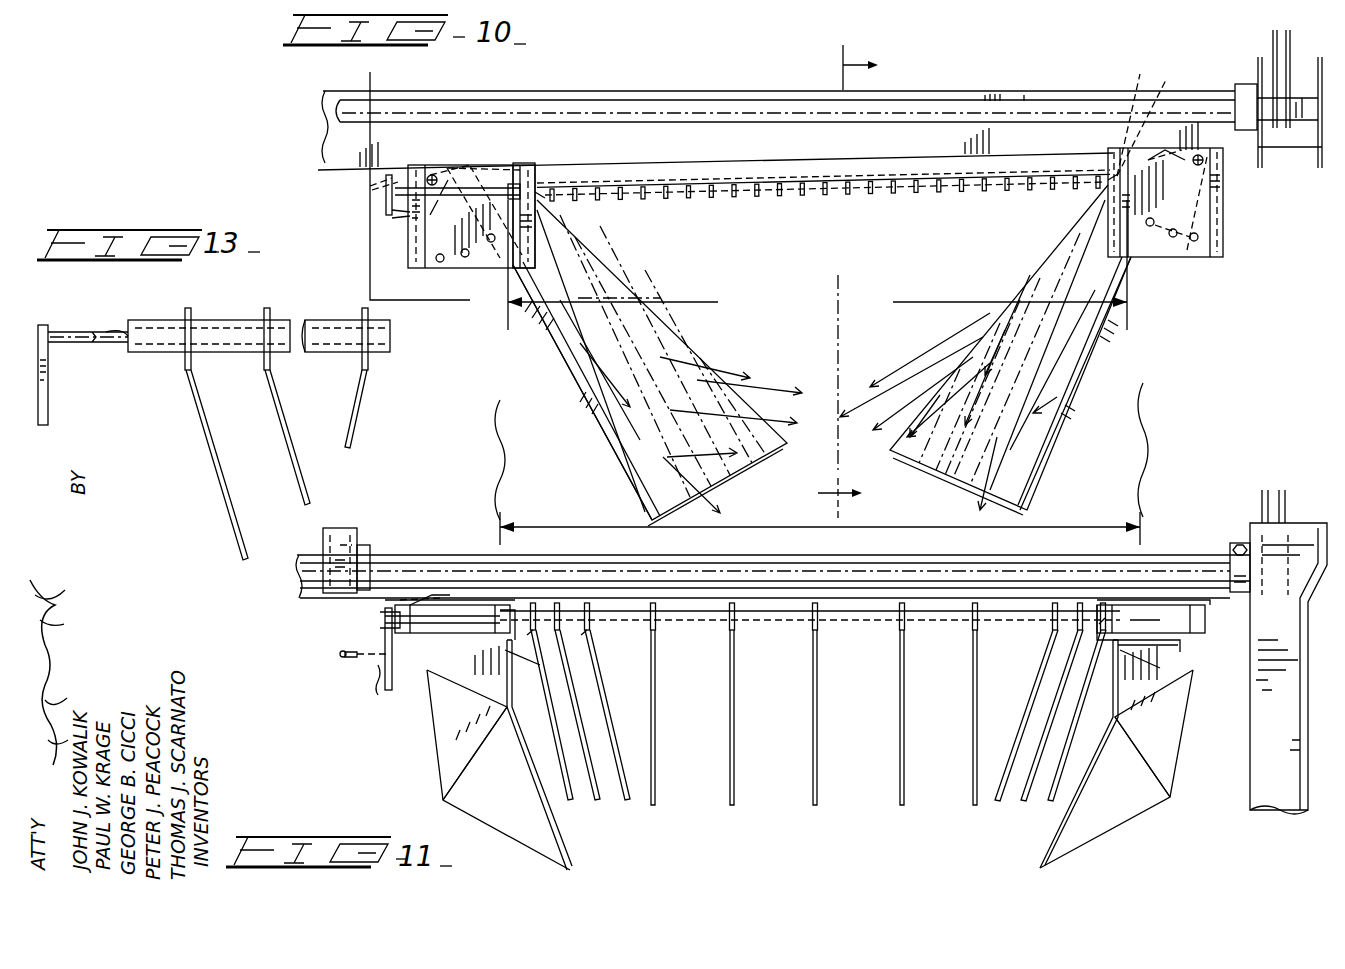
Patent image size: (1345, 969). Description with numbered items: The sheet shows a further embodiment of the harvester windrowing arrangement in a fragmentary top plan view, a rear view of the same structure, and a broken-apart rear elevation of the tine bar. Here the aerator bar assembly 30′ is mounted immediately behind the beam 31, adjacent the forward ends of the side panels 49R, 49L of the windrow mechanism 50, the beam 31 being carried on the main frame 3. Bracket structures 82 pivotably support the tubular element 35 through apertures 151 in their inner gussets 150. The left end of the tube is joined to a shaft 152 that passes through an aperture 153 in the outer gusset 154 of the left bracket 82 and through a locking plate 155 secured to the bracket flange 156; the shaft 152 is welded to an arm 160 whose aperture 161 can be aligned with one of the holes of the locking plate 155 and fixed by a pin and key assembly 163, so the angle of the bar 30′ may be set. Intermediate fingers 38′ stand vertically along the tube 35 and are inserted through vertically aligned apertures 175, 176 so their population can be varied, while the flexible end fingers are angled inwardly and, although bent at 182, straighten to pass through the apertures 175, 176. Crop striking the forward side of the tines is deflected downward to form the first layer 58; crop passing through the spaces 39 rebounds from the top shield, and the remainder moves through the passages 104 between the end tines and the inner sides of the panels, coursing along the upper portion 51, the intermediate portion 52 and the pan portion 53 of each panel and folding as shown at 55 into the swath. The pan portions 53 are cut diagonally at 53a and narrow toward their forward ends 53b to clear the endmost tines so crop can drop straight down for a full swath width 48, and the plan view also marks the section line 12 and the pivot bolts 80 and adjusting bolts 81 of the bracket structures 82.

In FIG. 10, the main frame beam 3 is at (370, 72).
In FIG. 10, the section line 12 is at (839, 283).
In FIG. 10, the aerator bar assembly 30′ is at (1032, 170).
In FIG. 11, the aerator bar assembly 30′ is at (1005, 608).
In FIG. 10, the beam 31 is at (1024, 94).
In FIG. 11, the beam 31 is at (897, 556).
In FIG. 13, the tubular element 35 is at (332, 336).
In FIG. 10, the intermediate fingers 38′ is at (748, 196).
In FIG. 11, the intermediate fingers 38′ is at (812, 681).
In FIG. 11, the spaces between the teeth 39 is at (770, 782).
In FIG. 10, the swath width 48 is at (534, 324).
In FIG. 10, the left side panel 49L is at (610, 445).
In FIG. 11, the left side panel 49L is at (442, 798).
In FIG. 10, the right side panel 49R is at (1097, 361).
In FIG. 11, the right side panel 49R is at (1172, 796).
In FIG. 10, the windrow mechanism 50 is at (1030, 508).
In FIG. 10, the upper portion 51 is at (580, 345).
In FIG. 11, the upper portion 51 is at (428, 692).
In FIG. 10, the intermediate portion 52 is at (576, 270).
In FIG. 11, the intermediate portion 52 is at (452, 748).
In FIG. 10, the pan portion 53 is at (650, 341).
In FIG. 11, the pan portion 53 is at (486, 815).
In FIG. 10, the diagonal cut 53a is at (616, 260).
In FIG. 10, the forward end of pan portion 53b is at (468, 168).
In FIG. 10, the branch of material flow 55 is at (873, 402).
In FIG. 11, the first layer 58 is at (558, 806).
In FIG. 10, the pivot bolt 80 is at (432, 178).
In FIG. 10, the adjustment bolts 81 is at (442, 262).
In FIG. 10, the bracket structure 82 is at (403, 275).
In FIG. 11, the bracket structure 82 is at (411, 672).
In FIG. 11, the passage 104 is at (516, 666).
In FIG. 10, the inner gusset 150 is at (540, 240).
In FIG. 11, the inner gusset 150 is at (507, 608).
In FIG. 10, the aperture 151 is at (538, 150).
In FIG. 11, the aperture 151 is at (494, 698).
In FIG. 10, the shaft 152 is at (495, 190).
In FIG. 11, the shaft 152 is at (454, 614).
In FIG. 13, the shaft 152 is at (84, 336).
In FIG. 10, the aperture 153 is at (368, 188).
In FIG. 11, the aperture 153 is at (436, 602).
In FIG. 10, the gusset 154 is at (410, 300).
In FIG. 11, the gusset 154 is at (414, 600).
In FIG. 10, the locking plate 155 is at (410, 214).
In FIG. 11, the locking plate 155 is at (378, 612).
In FIG. 11, the bracket flange 156 is at (391, 608).
In FIG. 10, the arm 160 is at (386, 194).
In FIG. 11, the arm 160 is at (352, 642).
In FIG. 13, the arm 160 is at (50, 382).
In FIG. 11, the aperture 161 is at (361, 706).
In FIG. 11, the pin and key assembly 163 is at (372, 684).
In FIG. 11, the aperture 175 is at (668, 627).
In FIG. 11, the aperture 176 is at (700, 634).
In FIG. 11, the bend 182 is at (562, 632).